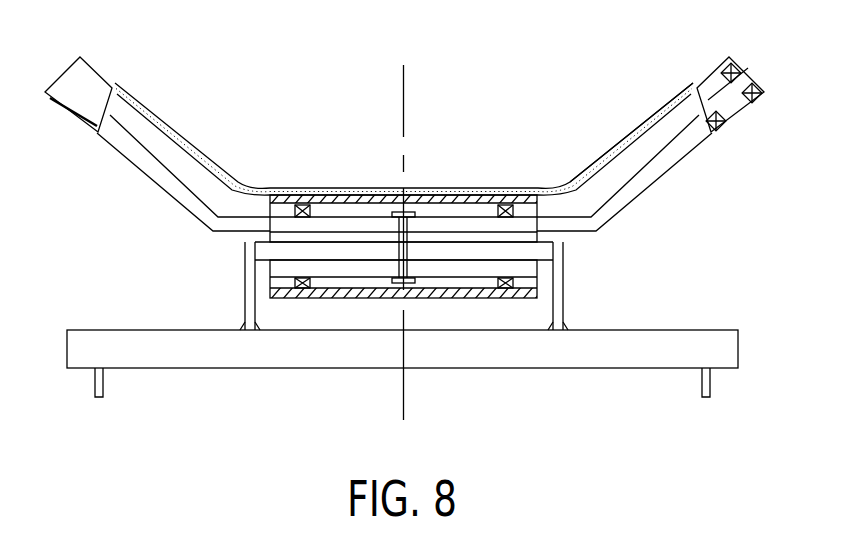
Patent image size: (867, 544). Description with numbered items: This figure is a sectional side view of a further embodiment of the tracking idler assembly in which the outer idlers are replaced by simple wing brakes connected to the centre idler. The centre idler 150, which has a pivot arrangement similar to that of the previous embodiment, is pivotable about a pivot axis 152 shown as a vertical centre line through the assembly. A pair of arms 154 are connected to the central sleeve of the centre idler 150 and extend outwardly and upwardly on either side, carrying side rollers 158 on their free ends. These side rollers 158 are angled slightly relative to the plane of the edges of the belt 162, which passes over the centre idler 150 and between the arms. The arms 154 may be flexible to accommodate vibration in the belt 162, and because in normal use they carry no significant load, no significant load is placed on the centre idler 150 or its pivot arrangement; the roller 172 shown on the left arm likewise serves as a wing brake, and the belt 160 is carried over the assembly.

The centre idler 150 is at (456, 192).
The pivot axis 152 is at (410, 94).
The arms 154 is at (160, 172).
The side rollers 158 is at (752, 118).
The conveyor belt 160 is at (112, 87).
The belt 162 is at (633, 131).
The left roller 172 is at (90, 78).